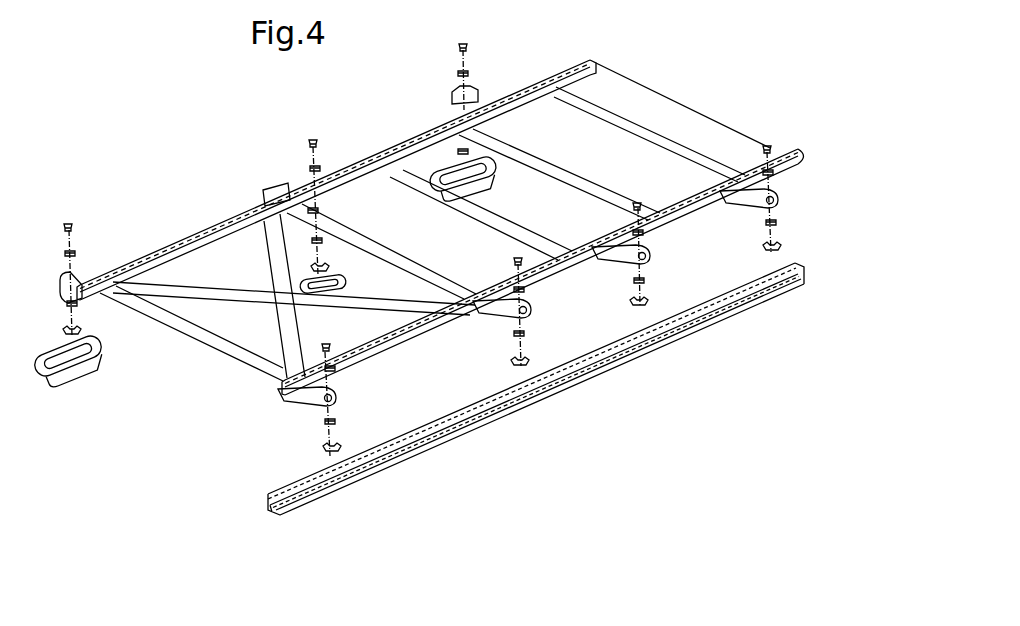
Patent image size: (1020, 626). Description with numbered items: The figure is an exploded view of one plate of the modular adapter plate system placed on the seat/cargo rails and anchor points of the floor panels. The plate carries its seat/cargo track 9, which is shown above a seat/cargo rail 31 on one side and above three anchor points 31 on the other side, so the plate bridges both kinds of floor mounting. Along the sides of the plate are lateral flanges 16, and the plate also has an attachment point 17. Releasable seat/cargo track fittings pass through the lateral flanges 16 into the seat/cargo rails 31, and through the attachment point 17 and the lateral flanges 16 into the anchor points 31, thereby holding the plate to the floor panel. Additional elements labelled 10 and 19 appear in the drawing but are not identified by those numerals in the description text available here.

The seat/cargo track 9 is at (782, 152).
The rear mounting rail 10 is at (589, 62).
The lateral flanges 16 is at (307, 385).
The attachment point 17 is at (288, 179).
The fastening clamp 19 is at (480, 90).
The seat/cargo rail / anchor point 31 is at (447, 175).